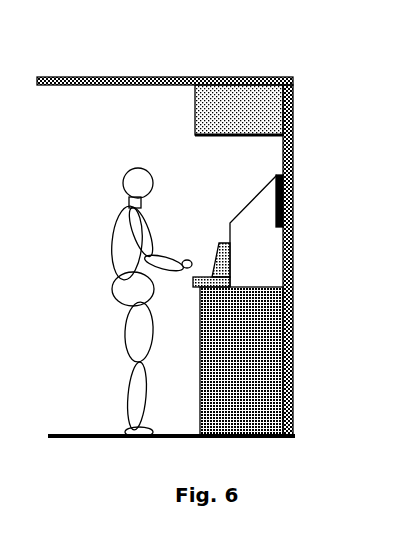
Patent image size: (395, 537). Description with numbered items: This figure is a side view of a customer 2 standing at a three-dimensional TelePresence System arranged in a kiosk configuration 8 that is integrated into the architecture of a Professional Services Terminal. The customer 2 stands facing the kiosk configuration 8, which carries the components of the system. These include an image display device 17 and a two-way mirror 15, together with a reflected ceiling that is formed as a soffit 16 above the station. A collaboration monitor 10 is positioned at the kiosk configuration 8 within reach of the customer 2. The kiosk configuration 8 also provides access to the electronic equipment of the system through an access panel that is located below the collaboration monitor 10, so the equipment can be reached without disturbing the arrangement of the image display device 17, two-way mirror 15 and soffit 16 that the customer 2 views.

The customer 2 is at (112, 243).
The kiosk configuration 8 is at (200, 347).
The collaboration monitor 10 is at (217, 275).
The two-way mirror 15 is at (245, 203).
The soffit 16 is at (195, 115).
The image display device 17 is at (275, 202).